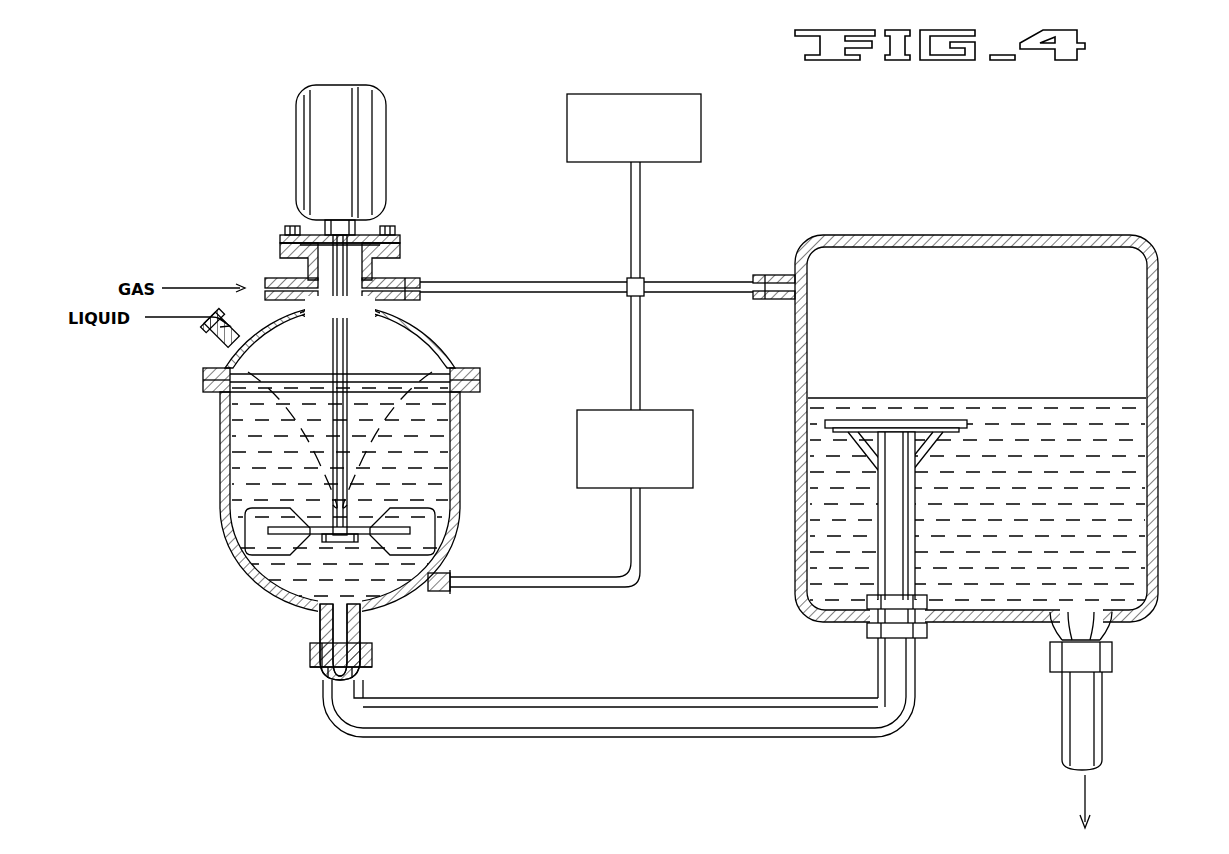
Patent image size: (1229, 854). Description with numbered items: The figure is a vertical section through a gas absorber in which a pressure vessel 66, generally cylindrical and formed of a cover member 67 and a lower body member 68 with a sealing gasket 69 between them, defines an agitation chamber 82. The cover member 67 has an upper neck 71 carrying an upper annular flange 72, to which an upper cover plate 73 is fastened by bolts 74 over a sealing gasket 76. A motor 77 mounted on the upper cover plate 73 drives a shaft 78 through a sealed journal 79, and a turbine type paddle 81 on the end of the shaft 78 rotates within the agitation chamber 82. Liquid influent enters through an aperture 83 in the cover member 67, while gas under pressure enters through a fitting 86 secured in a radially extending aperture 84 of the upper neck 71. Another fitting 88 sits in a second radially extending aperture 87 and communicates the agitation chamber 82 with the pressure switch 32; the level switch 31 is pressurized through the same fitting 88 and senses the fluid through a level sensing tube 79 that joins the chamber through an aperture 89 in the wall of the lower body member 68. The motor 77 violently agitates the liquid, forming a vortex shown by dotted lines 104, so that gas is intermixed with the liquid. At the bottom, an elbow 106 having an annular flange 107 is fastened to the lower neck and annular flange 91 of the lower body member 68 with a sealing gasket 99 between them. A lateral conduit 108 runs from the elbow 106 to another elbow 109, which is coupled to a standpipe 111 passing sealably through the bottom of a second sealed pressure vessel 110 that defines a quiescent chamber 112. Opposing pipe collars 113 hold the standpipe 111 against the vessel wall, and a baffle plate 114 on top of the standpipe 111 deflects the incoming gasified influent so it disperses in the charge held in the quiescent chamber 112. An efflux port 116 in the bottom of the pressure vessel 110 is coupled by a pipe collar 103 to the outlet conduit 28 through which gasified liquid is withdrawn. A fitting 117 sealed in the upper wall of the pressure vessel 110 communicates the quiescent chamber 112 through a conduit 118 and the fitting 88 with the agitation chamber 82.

The outlet conduit 28 is at (1103, 716).
The level switch 31 is at (686, 448).
The pressure switch 32 is at (607, 160).
The pressure vessel 66 is at (205, 433).
The cover member 67 is at (450, 362).
The lower body member 68 is at (220, 470).
The sealing gasket 69 is at (481, 378).
The upper neck 71 is at (380, 258).
The upper annular flange 72 is at (290, 258).
The upper cover plate 73 is at (401, 238).
The bolts 74 is at (287, 230).
The sealing gasket 76 is at (290, 244).
The motor 77 is at (297, 150).
The shaft 78 is at (333, 350).
The sealed journal 79 is at (338, 222).
The turbine type paddle 81 is at (248, 530).
The agitation chamber 82 is at (323, 402).
The aperture 83 is at (222, 328).
The radially extending aperture 84 is at (312, 321).
The fitting 86 is at (268, 294).
The radially extending aperture 87 is at (372, 321).
The fitting 88 is at (412, 301).
The aperture 89 is at (428, 580).
The lower neck and annular flange 91 is at (320, 645).
The sealing gasket 99 is at (373, 653).
The pipe collar 103 is at (1113, 655).
The vortex 104 is at (305, 425).
The elbow 106 is at (330, 718).
The annular flange 107 is at (312, 667).
The lateral conduit 108 is at (560, 738).
The elbow 109 is at (903, 722).
The pressure vessel 110 is at (1158, 425).
The standpipe 111 is at (916, 530).
The quiescent chamber 112 is at (1042, 384).
The pipe collars 113 is at (868, 633).
The baffle plate 114 is at (914, 420).
The efflux port 116 is at (1082, 622).
The fitting 117 is at (764, 300).
The conduit 118 is at (688, 281).